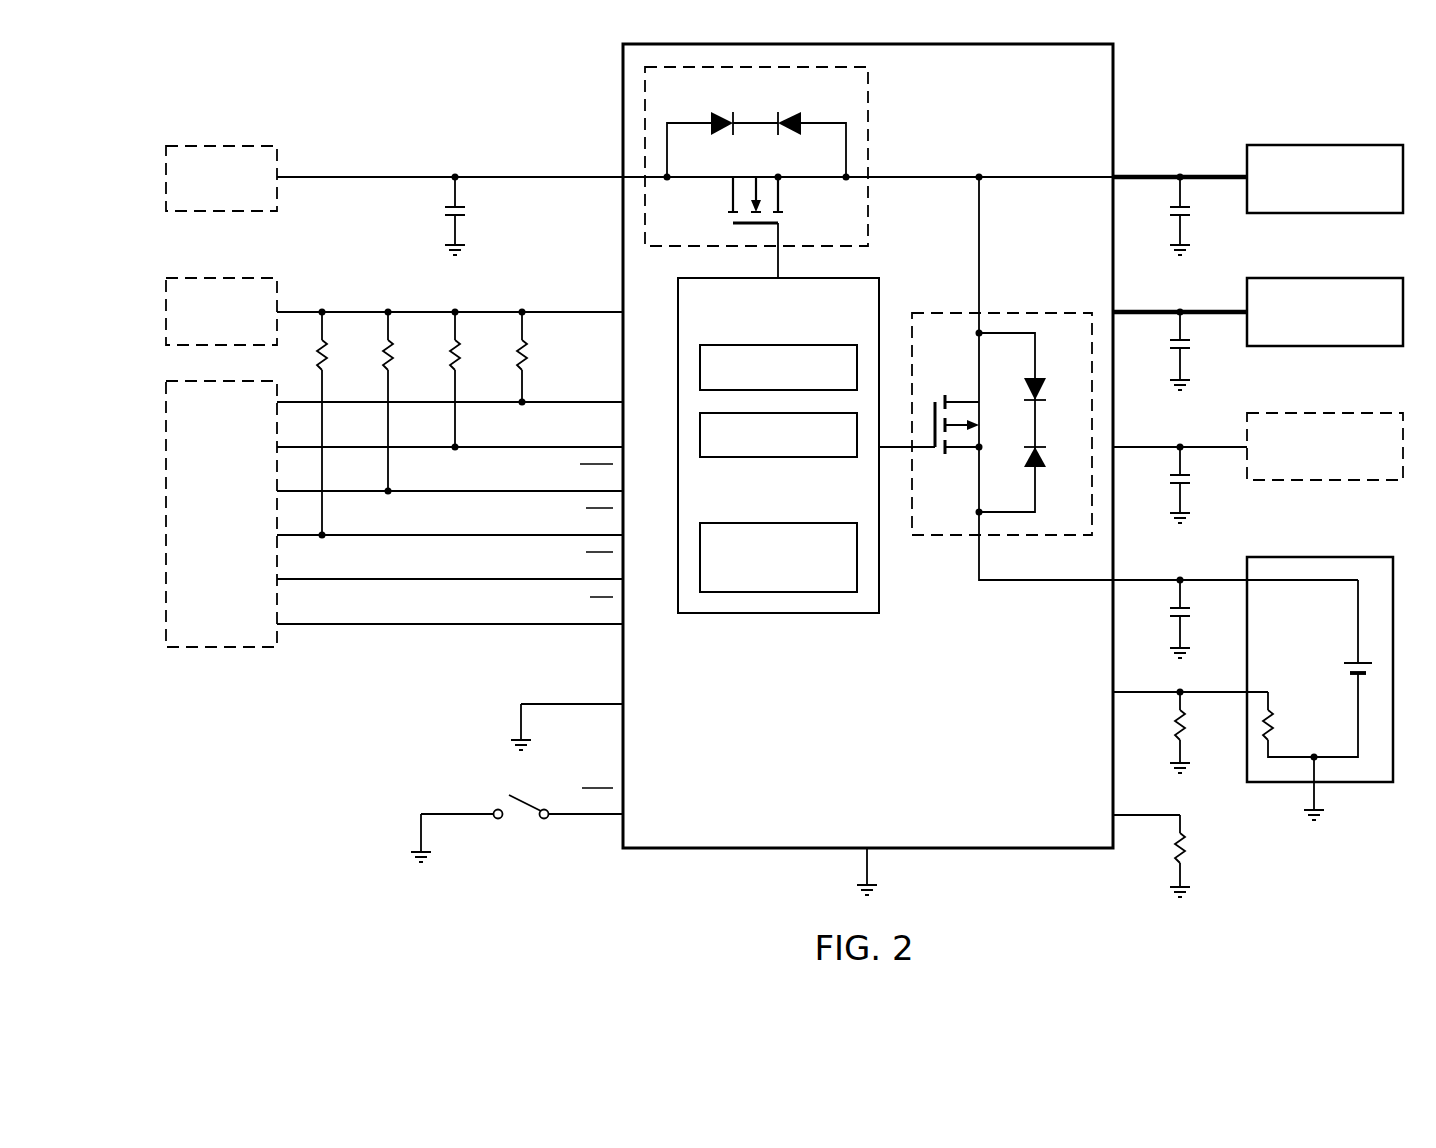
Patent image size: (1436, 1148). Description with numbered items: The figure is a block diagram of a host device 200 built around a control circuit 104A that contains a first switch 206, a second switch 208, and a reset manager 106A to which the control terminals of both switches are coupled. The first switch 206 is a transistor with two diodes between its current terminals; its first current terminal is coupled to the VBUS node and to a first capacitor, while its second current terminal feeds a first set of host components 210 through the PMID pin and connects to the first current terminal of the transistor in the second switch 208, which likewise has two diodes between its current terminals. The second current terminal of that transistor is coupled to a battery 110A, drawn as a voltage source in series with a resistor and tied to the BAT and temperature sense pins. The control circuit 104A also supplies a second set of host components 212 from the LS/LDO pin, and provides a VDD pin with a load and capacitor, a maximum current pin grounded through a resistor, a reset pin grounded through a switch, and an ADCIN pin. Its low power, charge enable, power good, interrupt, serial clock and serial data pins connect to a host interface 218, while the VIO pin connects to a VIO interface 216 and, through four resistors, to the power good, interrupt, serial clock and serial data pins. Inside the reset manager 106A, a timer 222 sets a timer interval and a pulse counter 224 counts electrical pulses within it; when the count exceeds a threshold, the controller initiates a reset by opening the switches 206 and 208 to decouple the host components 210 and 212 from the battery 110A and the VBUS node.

The host device 200 is at (334, 766).
The control circuit 104A is at (840, 723).
The reset manager 106A is at (753, 622).
The battery 110A is at (1324, 703).
The first switch 206 is at (874, 126).
The second switch 208 is at (1030, 306).
The first set of host components 210 is at (1326, 145).
The second set of host components 212 is at (1326, 278).
The VIO interface 216 is at (220, 277).
The host interface 218 is at (201, 543).
The timer 222 is at (758, 458).
The pulse counter 224 is at (803, 522).